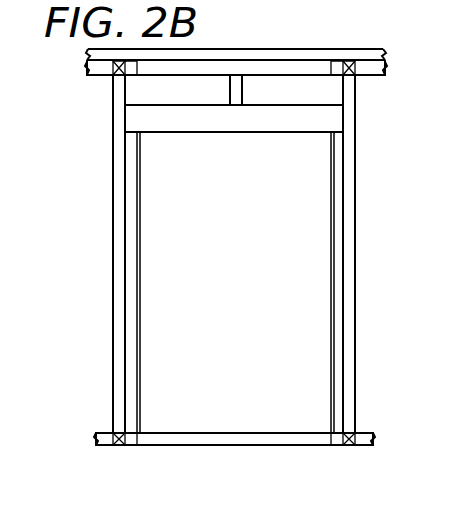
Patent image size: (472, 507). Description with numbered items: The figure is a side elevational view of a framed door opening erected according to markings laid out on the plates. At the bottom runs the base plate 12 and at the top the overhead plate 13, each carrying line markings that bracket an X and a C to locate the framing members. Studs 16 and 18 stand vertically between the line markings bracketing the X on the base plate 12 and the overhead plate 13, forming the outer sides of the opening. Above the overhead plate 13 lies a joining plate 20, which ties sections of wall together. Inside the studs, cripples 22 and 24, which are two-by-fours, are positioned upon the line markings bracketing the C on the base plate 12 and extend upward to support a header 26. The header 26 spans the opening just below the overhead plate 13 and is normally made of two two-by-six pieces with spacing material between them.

The base plate 12 is at (267, 440).
The overhead plate 13 is at (372, 76).
The stud 16 is at (113, 218).
The stud 18 is at (355, 212).
The joining plate 20 is at (312, 49).
The cripple 22 is at (137, 220).
The cripple 24 is at (331, 227).
The header 26 is at (225, 132).